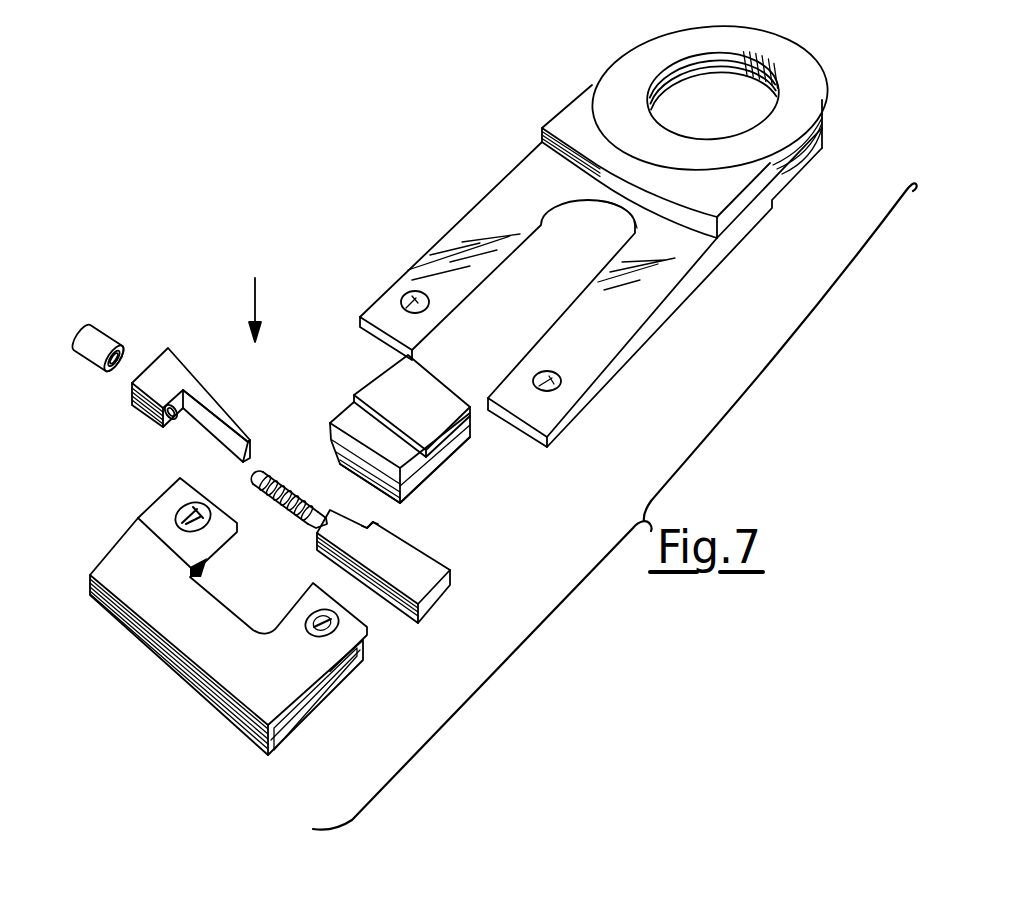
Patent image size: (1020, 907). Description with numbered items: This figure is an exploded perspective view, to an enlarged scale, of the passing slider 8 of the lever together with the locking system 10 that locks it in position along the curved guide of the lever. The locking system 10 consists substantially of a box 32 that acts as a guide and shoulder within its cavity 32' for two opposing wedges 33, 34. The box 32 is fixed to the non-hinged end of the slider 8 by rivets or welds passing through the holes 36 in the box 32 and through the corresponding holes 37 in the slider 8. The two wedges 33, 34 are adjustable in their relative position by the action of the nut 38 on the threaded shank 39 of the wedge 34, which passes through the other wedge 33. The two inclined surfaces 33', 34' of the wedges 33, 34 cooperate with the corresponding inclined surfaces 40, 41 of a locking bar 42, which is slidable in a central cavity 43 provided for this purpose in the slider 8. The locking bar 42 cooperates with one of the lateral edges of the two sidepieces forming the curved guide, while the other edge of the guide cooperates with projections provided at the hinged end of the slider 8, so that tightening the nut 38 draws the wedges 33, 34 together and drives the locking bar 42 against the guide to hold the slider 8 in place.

The slider 8 is at (530, 182).
The locking system 10 is at (255, 298).
The box 32 is at (207, 616).
The cavity 32' is at (339, 697).
The wedge 33 is at (191, 372).
The inclined surface 33' is at (227, 415).
The wedge 34 is at (413, 566).
The inclined surface 34' is at (404, 535).
The holes 36 is at (190, 502).
The holes 37 is at (401, 302).
The nut 38 is at (95, 337).
The threaded shank 39 is at (286, 498).
The inclined surface 40 is at (341, 455).
The inclined surface 41 is at (374, 481).
The locking bar 42 is at (387, 386).
The central cavity 43 is at (535, 272).